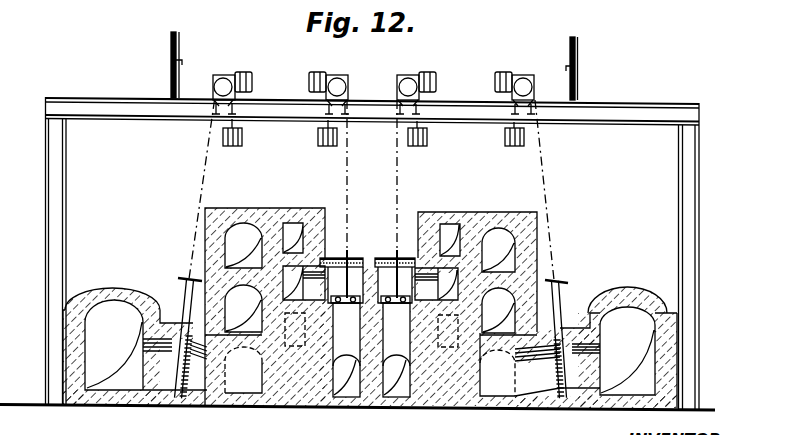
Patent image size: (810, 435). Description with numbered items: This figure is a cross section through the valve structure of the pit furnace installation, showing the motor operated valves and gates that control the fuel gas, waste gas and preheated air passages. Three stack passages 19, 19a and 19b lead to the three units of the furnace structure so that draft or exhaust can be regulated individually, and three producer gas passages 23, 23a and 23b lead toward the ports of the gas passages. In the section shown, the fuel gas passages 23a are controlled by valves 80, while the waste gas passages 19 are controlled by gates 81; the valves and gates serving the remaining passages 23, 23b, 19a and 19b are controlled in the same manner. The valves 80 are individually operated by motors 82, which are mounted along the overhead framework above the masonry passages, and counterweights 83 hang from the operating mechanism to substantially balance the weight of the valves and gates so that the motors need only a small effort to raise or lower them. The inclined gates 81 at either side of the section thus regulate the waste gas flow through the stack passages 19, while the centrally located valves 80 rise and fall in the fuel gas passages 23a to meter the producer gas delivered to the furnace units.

The stack passage 19 is at (497, 364).
The stack passage 19a is at (498, 310).
The stack passage 19b is at (498, 250).
The producer gas passage 23 is at (448, 352).
The fuel gas passage 23a is at (437, 274).
The producer gas passage 23b is at (449, 240).
The valve 80 is at (370, 323).
The gate 81 is at (184, 366).
The motor 82 is at (244, 72).
The counterweight 83 is at (238, 150).